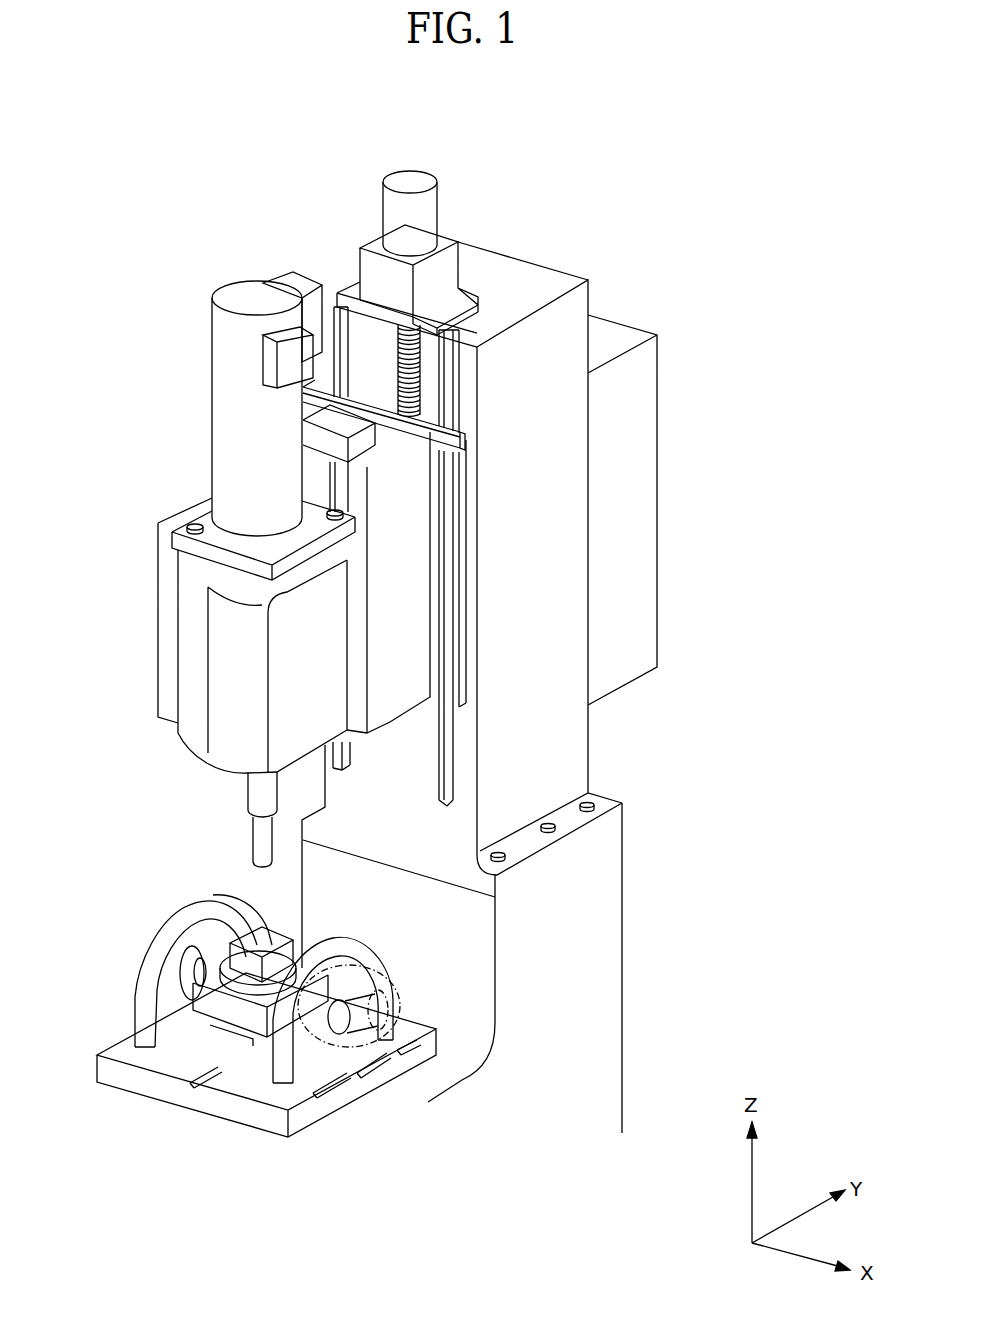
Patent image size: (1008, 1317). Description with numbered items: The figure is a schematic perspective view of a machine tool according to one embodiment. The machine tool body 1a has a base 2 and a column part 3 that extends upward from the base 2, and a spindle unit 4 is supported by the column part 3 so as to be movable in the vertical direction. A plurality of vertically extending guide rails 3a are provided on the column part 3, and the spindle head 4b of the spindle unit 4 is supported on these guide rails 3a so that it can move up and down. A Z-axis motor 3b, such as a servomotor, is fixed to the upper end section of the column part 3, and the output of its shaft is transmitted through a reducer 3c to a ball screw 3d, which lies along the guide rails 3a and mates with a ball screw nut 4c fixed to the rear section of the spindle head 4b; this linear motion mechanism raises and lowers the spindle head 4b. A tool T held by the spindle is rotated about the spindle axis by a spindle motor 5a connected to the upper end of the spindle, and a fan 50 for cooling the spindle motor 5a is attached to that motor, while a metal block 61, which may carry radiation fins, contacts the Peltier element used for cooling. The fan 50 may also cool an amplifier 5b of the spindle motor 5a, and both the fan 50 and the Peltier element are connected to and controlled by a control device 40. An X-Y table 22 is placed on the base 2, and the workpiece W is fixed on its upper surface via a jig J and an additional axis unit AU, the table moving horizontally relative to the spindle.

The machine tool body 1a is at (590, 745).
The base 2 is at (488, 1138).
The column part 3 is at (557, 482).
The guide rails 3a is at (340, 378).
The Z-axis motor 3b is at (383, 197).
The reducer 3c is at (447, 267).
The ball screw 3d is at (397, 337).
The spindle unit 4 is at (136, 553).
The spindle head 4b is at (405, 637).
The ball screw nut 4c is at (434, 416).
The spindle motor 5a is at (218, 290).
The amplifier 5b is at (356, 438).
The X-Y table 22 is at (225, 1105).
The control device 40 is at (658, 547).
The fan 50 is at (266, 371).
The metal block 61 is at (291, 278).
The additional axis unit AU is at (138, 928).
The jig J is at (300, 958).
The tool T is at (252, 838).
The workpiece W is at (245, 948).